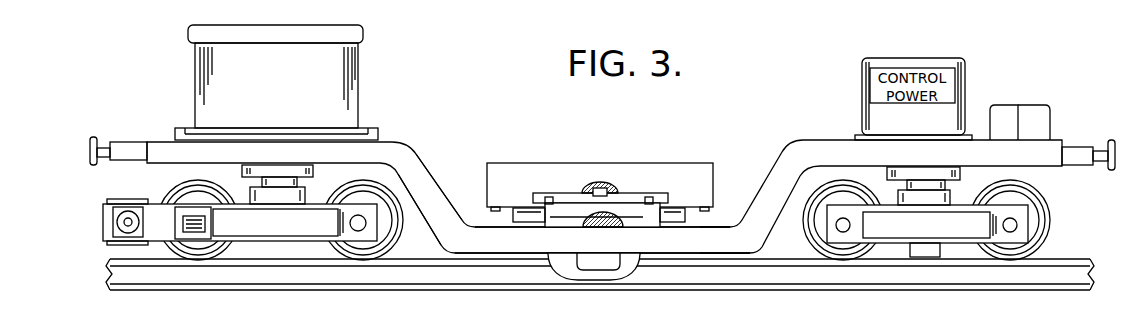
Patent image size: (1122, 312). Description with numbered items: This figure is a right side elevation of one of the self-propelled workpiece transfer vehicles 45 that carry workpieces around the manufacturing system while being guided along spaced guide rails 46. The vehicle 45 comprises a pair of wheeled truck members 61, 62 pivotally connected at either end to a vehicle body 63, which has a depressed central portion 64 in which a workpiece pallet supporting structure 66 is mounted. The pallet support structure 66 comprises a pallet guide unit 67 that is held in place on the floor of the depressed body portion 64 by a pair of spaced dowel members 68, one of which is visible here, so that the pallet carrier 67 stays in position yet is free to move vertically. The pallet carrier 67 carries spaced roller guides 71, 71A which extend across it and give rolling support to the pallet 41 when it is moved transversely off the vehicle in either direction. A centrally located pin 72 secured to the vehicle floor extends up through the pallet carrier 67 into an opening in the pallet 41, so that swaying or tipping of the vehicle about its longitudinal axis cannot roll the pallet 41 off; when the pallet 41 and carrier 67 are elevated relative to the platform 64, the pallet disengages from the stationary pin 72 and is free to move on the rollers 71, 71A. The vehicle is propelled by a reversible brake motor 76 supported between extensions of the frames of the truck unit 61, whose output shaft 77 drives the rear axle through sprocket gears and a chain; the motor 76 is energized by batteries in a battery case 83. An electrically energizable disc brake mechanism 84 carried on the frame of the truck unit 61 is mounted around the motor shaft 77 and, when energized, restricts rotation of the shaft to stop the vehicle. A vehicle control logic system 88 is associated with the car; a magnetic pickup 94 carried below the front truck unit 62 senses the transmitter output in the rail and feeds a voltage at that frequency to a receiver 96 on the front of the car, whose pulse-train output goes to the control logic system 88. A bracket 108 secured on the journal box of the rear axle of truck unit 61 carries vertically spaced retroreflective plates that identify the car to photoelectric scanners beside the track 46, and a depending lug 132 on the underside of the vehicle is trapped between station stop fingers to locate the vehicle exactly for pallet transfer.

The pallet 41 is at (496, 173).
The self-propelled workpiece transfer vehicle 45 is at (453, 172).
The guide rail 46 is at (128, 273).
The truck unit 61 is at (215, 238).
The front truck unit 62 is at (927, 239).
The vehicle body 63 is at (400, 152).
The depressed central portion 64 is at (498, 242).
The workpiece pallet supporting structure 66 is at (648, 232).
The pallet guide unit 67 is at (640, 215).
The dowel member 68 is at (597, 225).
The roller guide 71 is at (550, 197).
The roller guide 71A is at (653, 195).
The pin 72 is at (607, 185).
The brake motor 76 is at (123, 200).
The motor shaft 77 is at (117, 225).
The battery case 83 is at (355, 78).
The disc brake mechanism 84 is at (118, 217).
The vehicle control logic system 88 is at (998, 117).
The magnetic pickup 94 is at (933, 252).
The receiver 96 is at (1033, 115).
The bracket 108 is at (213, 225).
The depending lug 132 is at (603, 263).